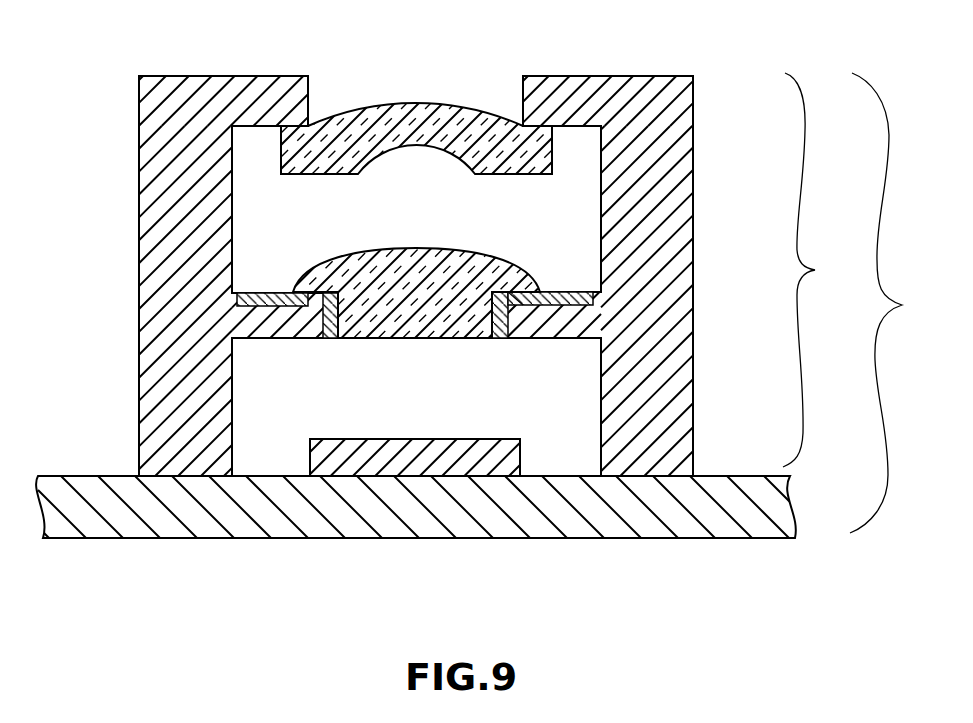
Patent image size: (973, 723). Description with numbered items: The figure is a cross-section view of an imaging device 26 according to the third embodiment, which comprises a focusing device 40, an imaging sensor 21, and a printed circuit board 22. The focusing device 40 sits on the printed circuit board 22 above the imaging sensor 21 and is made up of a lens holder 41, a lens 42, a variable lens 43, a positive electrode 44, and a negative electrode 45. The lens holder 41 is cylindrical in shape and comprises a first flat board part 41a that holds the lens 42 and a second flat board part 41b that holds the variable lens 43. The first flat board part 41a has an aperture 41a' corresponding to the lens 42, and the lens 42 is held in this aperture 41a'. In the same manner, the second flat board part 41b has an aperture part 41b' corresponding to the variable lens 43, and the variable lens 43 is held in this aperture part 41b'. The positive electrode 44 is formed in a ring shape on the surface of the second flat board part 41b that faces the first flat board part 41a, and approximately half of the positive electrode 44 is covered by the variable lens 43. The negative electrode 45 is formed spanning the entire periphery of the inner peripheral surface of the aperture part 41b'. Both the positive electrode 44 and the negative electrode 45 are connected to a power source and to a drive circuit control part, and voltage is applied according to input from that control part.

The imaging sensor 21 is at (360, 462).
The printed circuit board 22 is at (175, 523).
The imaging device 26 is at (898, 303).
The focusing device 40 is at (818, 270).
The lens holder 41 is at (175, 200).
The first flat board part 41a is at (223, 75).
The aperture 41a' is at (597, 69).
The second flat board part 41b is at (194, 296).
The aperture part 41b' is at (630, 270).
The lens 42 is at (393, 117).
The variable lens 43 is at (463, 253).
The positive electrode 44 is at (237, 297).
The negative electrode 45 is at (510, 325).